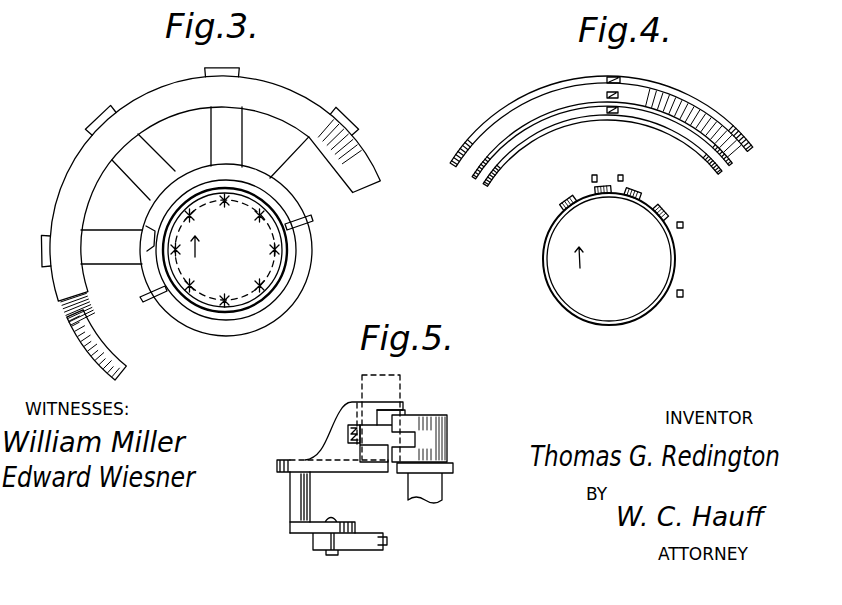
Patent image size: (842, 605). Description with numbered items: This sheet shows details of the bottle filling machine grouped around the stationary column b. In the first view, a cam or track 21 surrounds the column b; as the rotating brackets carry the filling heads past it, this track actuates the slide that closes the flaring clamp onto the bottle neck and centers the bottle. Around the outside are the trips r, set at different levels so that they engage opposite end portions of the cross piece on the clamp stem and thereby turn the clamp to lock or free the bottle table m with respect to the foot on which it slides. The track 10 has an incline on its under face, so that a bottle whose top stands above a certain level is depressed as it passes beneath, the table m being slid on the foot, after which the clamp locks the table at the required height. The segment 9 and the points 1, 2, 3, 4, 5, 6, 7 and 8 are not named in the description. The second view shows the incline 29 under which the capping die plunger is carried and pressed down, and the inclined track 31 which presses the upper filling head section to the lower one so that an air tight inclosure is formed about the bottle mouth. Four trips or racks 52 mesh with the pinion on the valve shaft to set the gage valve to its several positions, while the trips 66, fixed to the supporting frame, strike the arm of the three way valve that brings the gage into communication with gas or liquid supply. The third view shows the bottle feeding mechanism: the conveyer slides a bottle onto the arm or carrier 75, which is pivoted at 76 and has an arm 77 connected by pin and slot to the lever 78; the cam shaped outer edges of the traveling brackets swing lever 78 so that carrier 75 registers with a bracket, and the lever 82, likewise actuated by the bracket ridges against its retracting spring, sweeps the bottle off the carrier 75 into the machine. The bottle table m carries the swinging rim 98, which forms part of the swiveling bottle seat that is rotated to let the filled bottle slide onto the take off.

In FIG. 3, the segmental ring frame 9 is at (210, 196).
In FIG. 3, the cam or track 21 is at (243, 180).
In FIG. 3, the stationary column b is at (238, 313).
In FIG. 4, the stationary column b is at (562, 296).
In FIG. 3, the contact point 1 is at (224, 293).
In FIG. 3, the contact point 2 is at (192, 281).
In FIG. 3, the contact point 3 is at (179, 250).
In FIG. 3, the contact point 4 is at (191, 221).
In FIG. 3, the contact point 5 is at (224, 208).
In FIG. 3, the contact point 6 is at (254, 220).
In FIG. 3, the contact point 7 is at (269, 252).
In FIG. 3, the contact point 8 is at (257, 279).
In FIG. 3, the trips r is at (230, 270).
In FIG. 3, the track 10 is at (84, 344).
In FIG. 4, the chamfer or incline 29 is at (524, 112).
In FIG. 4, the inclined track 31 is at (718, 120).
In FIG. 4, the trips or racks 52 is at (564, 201).
In FIG. 4, the trips 66 is at (594, 175).
In FIG. 5, the arm or carrier 75 is at (328, 433).
In FIG. 5, the lever 82 is at (352, 424).
In FIG. 5, the rim or swinging arm 98 is at (410, 413).
In FIG. 5, the bottle table m is at (440, 489).
In FIG. 5, the pivot 76 is at (306, 489).
In FIG. 5, the arm 77 is at (345, 522).
In FIG. 5, the lever 78 is at (312, 548).